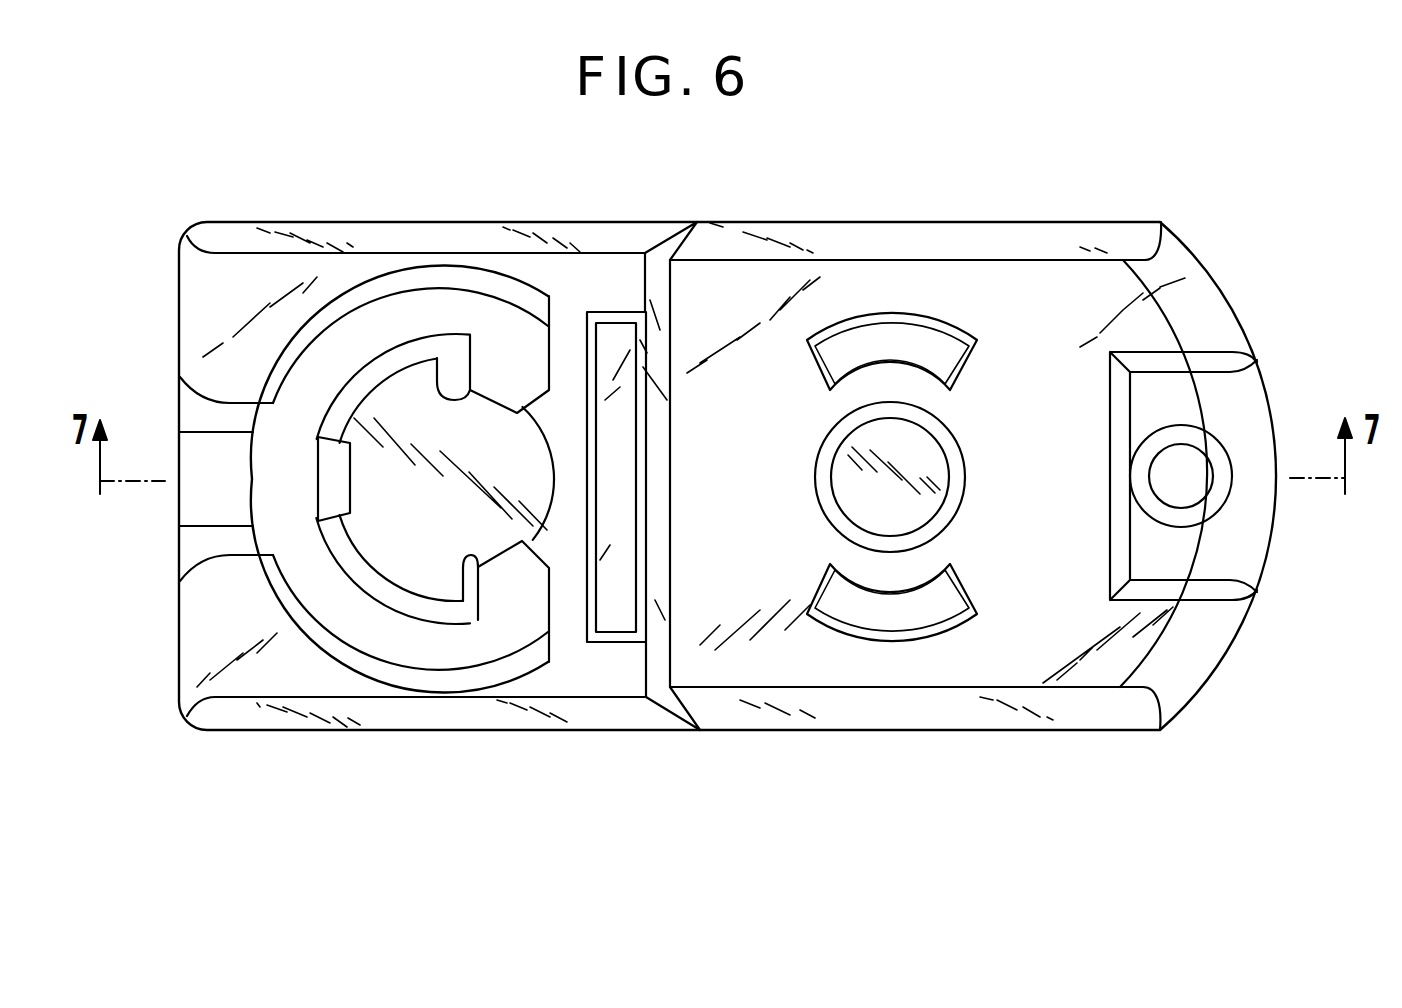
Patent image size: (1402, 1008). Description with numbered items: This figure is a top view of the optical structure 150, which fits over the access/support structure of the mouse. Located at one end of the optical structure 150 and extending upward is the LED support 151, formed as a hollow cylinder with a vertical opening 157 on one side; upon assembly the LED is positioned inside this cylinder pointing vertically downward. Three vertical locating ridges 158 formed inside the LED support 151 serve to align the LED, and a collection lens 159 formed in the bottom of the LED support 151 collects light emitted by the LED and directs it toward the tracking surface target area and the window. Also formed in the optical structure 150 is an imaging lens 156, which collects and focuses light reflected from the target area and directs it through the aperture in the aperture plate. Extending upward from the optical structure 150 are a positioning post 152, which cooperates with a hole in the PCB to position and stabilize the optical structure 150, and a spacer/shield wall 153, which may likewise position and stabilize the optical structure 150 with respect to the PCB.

The optical structure 150 is at (184, 735).
The LED support 151 is at (493, 325).
The positioning post 152 is at (1190, 483).
The spacer/shield wall 153 is at (920, 343).
The imaging lens 156 is at (920, 465).
The vertical opening 157 is at (530, 535).
The vertical locating ridges 158 is at (462, 401).
The collection lens 159 is at (378, 407).